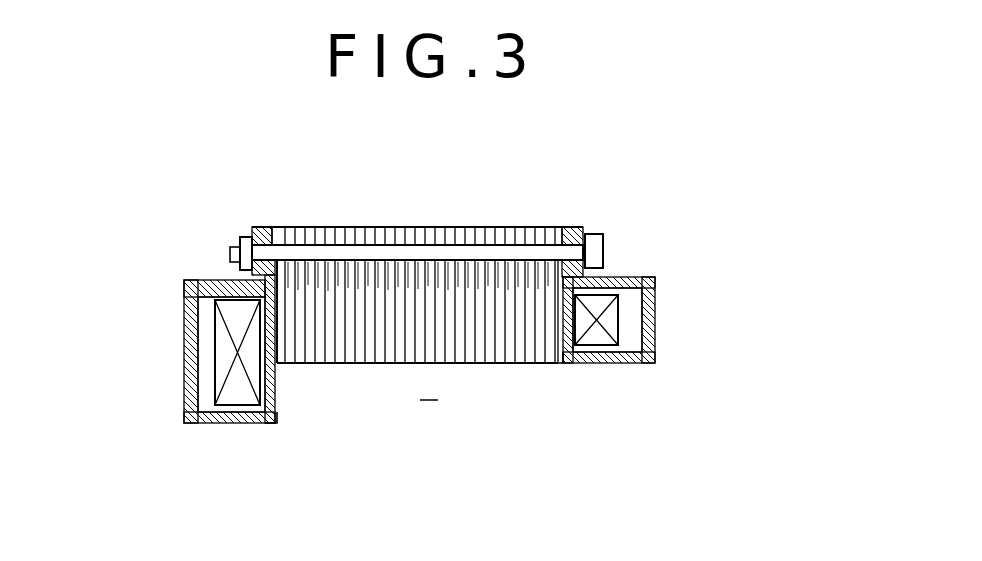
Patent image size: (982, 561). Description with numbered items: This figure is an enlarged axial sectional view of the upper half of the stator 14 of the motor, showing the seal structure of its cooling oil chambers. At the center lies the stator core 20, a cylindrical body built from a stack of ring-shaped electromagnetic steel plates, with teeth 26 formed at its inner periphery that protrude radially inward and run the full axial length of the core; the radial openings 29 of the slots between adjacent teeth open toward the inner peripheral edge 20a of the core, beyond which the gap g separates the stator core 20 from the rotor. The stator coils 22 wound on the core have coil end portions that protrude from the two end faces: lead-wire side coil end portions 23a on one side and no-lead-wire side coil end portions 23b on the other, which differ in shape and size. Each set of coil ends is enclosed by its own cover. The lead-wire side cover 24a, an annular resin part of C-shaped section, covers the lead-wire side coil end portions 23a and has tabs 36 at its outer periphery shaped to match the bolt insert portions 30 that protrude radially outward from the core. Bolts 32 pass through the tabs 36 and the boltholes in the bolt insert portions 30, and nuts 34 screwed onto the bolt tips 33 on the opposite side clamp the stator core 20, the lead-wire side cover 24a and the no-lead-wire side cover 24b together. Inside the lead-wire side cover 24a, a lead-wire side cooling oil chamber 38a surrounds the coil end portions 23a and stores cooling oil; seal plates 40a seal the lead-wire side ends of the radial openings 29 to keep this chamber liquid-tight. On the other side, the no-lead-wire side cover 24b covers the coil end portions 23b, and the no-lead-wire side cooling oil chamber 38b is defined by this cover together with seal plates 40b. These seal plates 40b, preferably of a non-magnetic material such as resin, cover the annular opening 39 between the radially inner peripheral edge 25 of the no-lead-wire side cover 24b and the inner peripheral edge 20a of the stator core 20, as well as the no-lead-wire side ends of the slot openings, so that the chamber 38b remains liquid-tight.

The stator 14 is at (693, 290).
The stator core 20 is at (428, 222).
The inner peripheral edge of the stator core 20a is at (279, 366).
The stator coil 22 is at (620, 286).
The lead-wire side coil end portion 23a is at (622, 330).
The no-lead-wire side coil end portion 23b is at (213, 358).
The lead-wire side cover 24a is at (658, 276).
The no-lead-wire side cover 24b is at (182, 289).
The radially inner peripheral edge of the no-lead-wire side cover 25 is at (268, 424).
The teeth 26 is at (392, 365).
The radial opening of the slot 29 is at (564, 362).
The bolt insert portion 30 is at (370, 226).
The bolt 32 is at (595, 233).
The bolt tip 33 is at (229, 250).
The nut 34 is at (244, 236).
The tab 36 is at (262, 226).
The lead-wire side cooling oil chamber 38a is at (630, 315).
The no-lead-wire side cooling oil chamber 38b is at (206, 318).
The annular opening 39 is at (276, 394).
The seal plate 40a is at (572, 365).
The seal plate 40b is at (274, 424).
The gap g is at (429, 386).